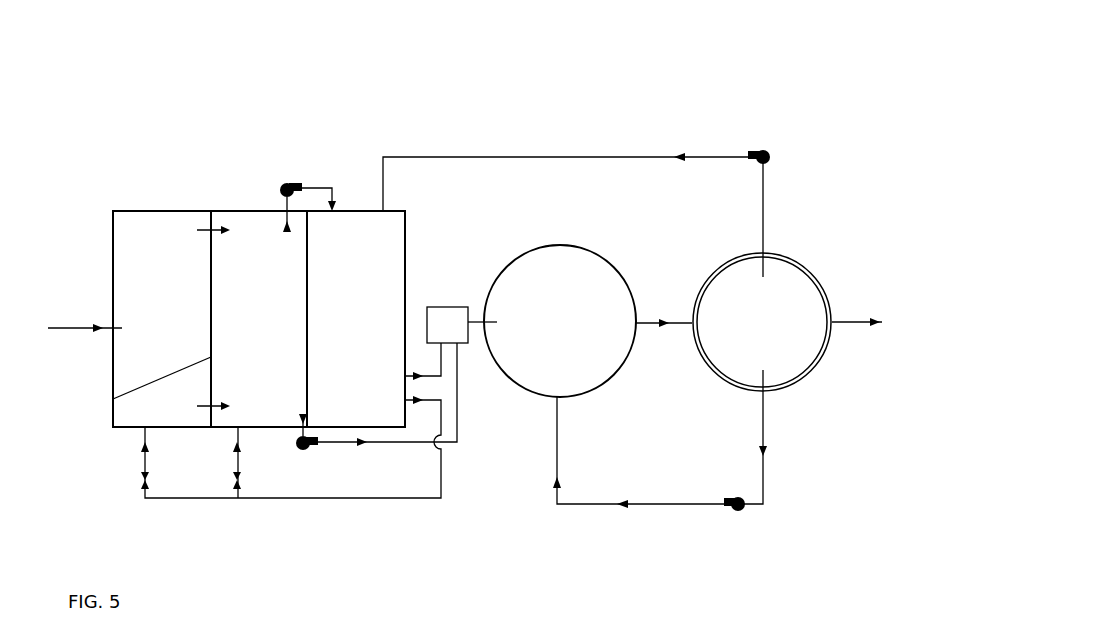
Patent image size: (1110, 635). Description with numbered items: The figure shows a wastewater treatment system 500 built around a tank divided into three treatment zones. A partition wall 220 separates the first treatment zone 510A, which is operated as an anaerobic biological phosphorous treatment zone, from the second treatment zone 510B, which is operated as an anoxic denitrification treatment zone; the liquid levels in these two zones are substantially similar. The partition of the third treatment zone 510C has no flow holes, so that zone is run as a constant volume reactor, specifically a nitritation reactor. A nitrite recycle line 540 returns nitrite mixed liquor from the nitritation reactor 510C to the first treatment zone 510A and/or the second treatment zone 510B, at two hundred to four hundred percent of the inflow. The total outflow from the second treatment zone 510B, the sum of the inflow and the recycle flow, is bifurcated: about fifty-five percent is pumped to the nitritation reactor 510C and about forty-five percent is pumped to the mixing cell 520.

The wastewater treatment system 500 is at (655, 86).
The first treatment zone 510A is at (162, 319).
The second treatment zone 510B is at (259, 319).
The third treatment zone 510C is at (356, 319).
The mixing cell 520 is at (451, 307).
The partition wall 220 is at (113, 399).
The nitrite recycle line 540 is at (325, 499).